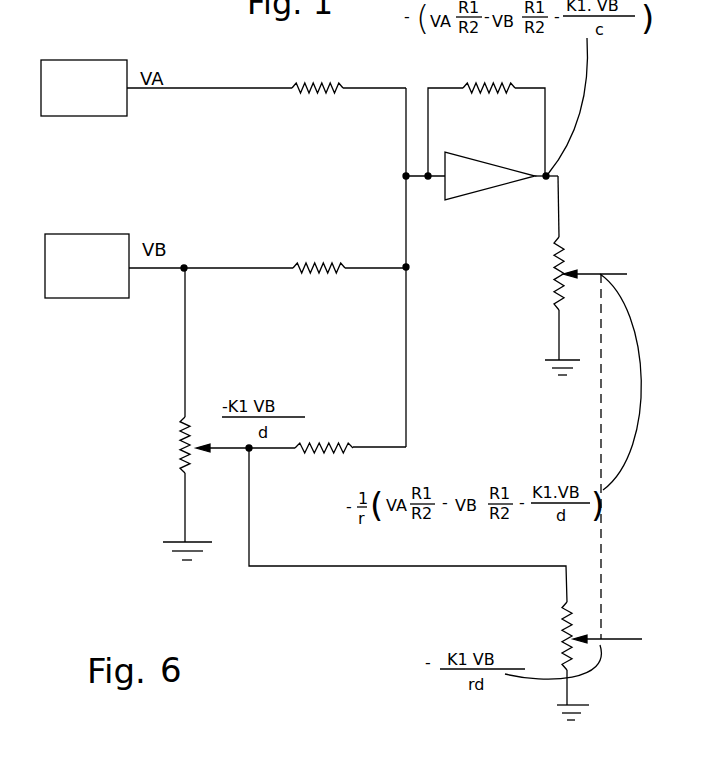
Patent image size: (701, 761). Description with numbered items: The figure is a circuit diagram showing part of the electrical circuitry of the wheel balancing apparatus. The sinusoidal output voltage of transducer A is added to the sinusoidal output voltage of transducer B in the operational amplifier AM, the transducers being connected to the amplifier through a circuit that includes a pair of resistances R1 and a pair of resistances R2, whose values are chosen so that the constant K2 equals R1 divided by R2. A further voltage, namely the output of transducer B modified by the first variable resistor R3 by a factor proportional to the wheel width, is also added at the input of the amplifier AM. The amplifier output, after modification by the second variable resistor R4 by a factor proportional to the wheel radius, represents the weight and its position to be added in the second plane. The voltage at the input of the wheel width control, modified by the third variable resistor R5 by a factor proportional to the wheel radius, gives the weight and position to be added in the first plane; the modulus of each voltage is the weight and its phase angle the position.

The transducer A is at (84, 88).
The transducer B is at (87, 266).
The operational amplifier AM is at (490, 176).
The resistance R1 is at (318, 164).
The resistance R2 is at (420, 268).
The first variable resistor R3 is at (192, 488).
The second variable resistor R4 is at (586, 306).
The third variable resistor R5 is at (581, 661).